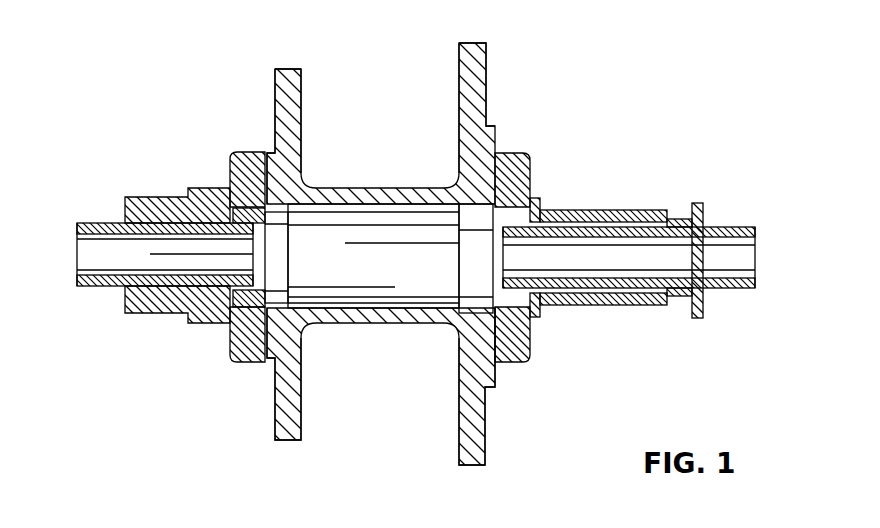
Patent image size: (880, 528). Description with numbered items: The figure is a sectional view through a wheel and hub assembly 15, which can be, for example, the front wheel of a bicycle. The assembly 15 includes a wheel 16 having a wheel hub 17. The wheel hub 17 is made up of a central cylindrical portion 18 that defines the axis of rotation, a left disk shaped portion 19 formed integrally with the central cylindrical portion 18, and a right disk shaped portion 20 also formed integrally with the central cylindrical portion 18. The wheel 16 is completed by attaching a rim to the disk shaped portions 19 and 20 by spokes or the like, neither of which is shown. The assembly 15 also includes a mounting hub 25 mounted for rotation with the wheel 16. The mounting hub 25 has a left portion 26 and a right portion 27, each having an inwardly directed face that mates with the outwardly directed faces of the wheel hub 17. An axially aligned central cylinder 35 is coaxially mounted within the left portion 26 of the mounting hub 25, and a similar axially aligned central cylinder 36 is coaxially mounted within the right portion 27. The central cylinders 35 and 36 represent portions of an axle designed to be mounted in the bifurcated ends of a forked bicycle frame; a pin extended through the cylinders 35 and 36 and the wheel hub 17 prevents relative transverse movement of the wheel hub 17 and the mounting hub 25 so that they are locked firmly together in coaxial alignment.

The wheel and hub assembly 15 is at (666, 90).
The wheel 16 is at (516, 49).
The wheel hub 17 is at (425, 72).
The central cylindrical portion 18 is at (358, 325).
The left disk shaped portion 19 is at (275, 433).
The right disk shaped portion 20 is at (477, 415).
The mounting hub 25 is at (639, 349).
The left portion of mounting hub 26 is at (190, 190).
The right portion of mounting hub 27 is at (530, 176).
The central cylinder 35 is at (87, 222).
The central cylinder 36 is at (727, 227).